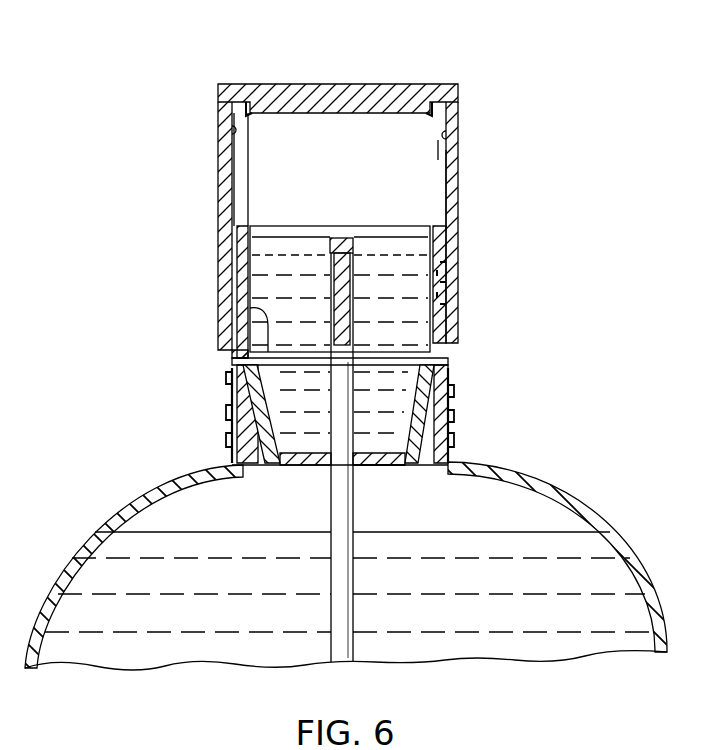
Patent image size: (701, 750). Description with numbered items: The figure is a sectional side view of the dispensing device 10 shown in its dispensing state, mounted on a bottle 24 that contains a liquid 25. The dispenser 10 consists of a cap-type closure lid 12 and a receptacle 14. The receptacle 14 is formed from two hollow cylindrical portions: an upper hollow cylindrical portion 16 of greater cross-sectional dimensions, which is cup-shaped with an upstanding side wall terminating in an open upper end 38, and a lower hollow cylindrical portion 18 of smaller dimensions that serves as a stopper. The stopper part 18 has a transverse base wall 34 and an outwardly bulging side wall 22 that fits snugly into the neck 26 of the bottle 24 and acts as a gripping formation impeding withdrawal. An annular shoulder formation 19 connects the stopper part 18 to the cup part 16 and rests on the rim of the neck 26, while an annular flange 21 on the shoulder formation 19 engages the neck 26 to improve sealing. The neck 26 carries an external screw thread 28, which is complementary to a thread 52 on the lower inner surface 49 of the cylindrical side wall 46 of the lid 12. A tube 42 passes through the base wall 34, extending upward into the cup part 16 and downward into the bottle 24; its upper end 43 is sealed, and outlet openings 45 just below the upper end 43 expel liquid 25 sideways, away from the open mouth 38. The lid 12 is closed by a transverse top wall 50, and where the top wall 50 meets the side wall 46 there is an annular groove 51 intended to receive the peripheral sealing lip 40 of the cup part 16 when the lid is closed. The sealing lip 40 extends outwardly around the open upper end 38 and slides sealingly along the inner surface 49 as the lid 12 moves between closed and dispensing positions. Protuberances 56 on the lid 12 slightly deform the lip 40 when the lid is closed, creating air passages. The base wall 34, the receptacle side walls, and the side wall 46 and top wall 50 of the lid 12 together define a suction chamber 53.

The dispensing device 10 is at (574, 124).
The closure lid 12 is at (468, 180).
The receptacle 14 is at (354, 427).
The upper hollow cylindrical portion 16 is at (385, 288).
The lower hollow cylindrical portion 18 is at (442, 458).
The annular shoulder formation 19 is at (238, 312).
The annular flange 21 is at (448, 372).
The side wall 22 is at (455, 418).
The bottle 24 is at (595, 502).
The liquid 25 is at (560, 605).
The neck 26 is at (232, 440).
The external screw thread 28 is at (236, 386).
The base wall 34 is at (376, 466).
The open upper end 38 is at (398, 240).
The sealing lip 40 is at (240, 238).
The tube 42 is at (352, 624).
The upper end 43 is at (315, 249).
The outlet openings 45 is at (336, 250).
The cylindrical side wall 46 is at (452, 195).
The inner surface 49 is at (440, 148).
The top wall 50 is at (342, 178).
The annular groove 51 is at (244, 118).
The thread 52 is at (448, 283).
The suction chamber 53 is at (348, 133).
The protuberances 56 is at (232, 131).